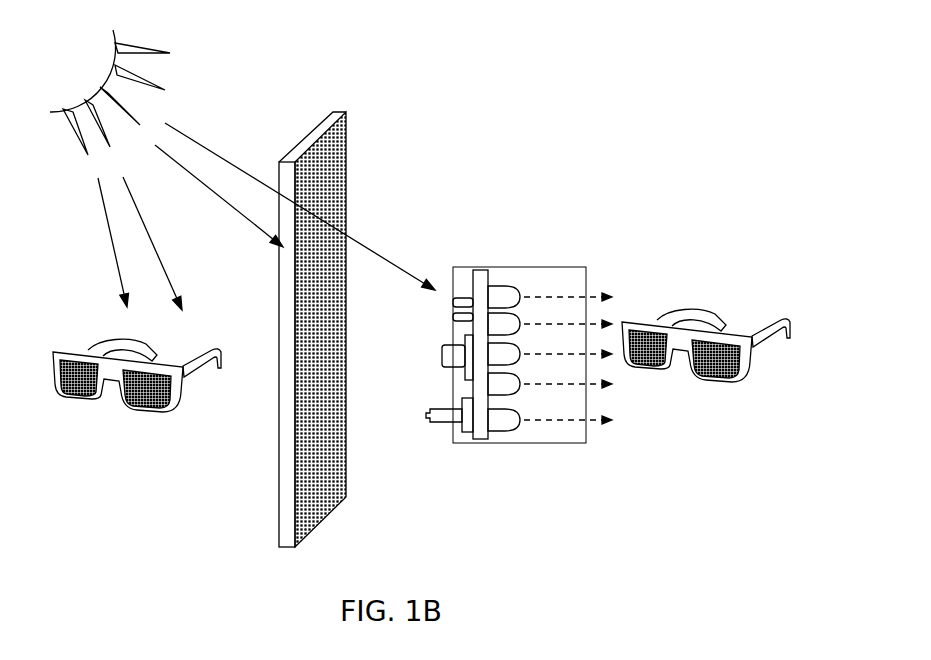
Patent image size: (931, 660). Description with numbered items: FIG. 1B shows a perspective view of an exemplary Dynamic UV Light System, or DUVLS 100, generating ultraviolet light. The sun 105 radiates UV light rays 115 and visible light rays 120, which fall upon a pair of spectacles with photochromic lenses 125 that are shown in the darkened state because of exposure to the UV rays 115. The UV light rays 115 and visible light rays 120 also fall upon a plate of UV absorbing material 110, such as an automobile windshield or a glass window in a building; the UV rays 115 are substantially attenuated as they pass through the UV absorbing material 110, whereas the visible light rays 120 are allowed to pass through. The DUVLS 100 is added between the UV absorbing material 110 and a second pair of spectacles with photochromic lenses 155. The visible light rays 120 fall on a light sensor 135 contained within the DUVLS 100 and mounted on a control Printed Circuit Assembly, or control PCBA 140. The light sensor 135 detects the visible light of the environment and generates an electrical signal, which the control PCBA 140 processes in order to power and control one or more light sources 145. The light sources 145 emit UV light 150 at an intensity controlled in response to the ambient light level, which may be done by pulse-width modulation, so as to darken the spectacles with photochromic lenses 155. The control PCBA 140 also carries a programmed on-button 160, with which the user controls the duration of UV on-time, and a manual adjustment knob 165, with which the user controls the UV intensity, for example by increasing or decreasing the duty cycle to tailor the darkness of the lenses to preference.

The Dynamic UV Light System (DUVLS) 100 is at (564, 240).
The sun 105 is at (53, 113).
The plate of UV absorbing material 110 is at (279, 498).
The UV light rays 115 is at (107, 232).
The visible light rays 120 is at (166, 250).
The spectacles with photochromic lenses 125 is at (176, 412).
The light sensor 135 is at (452, 306).
The control Printed Circuit Assembly (PCBA) 140 is at (472, 268).
The light sources 145 is at (503, 284).
The UV light 150 is at (550, 422).
The spectacles with photochromic lenses 155 is at (745, 382).
The programmed on-button 160 is at (441, 366).
The manual adjustment knob 165 is at (427, 428).